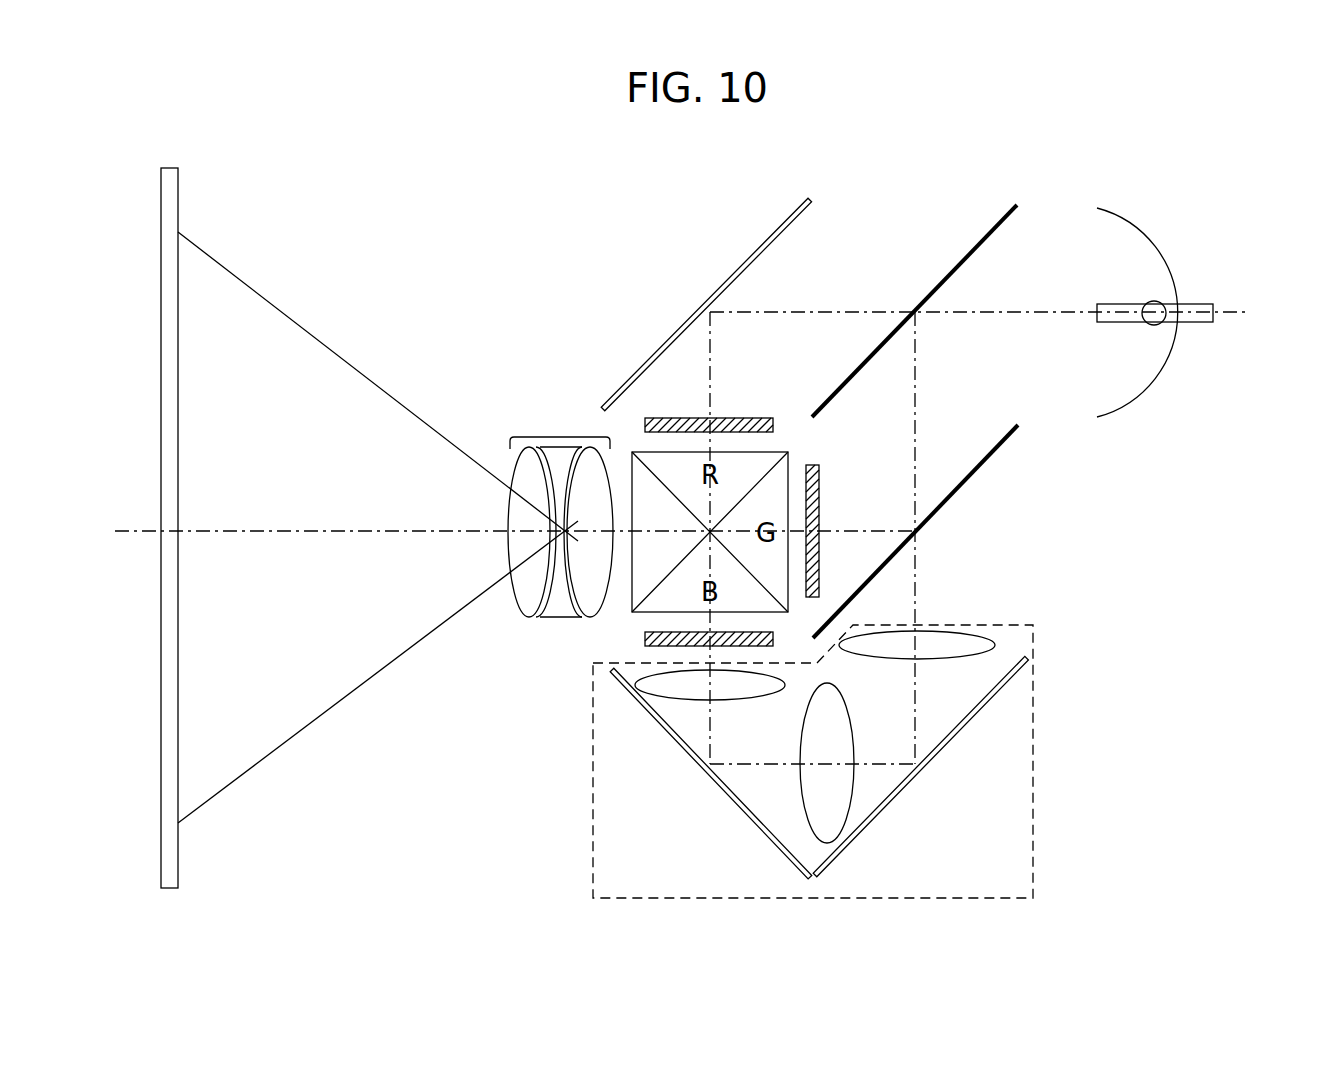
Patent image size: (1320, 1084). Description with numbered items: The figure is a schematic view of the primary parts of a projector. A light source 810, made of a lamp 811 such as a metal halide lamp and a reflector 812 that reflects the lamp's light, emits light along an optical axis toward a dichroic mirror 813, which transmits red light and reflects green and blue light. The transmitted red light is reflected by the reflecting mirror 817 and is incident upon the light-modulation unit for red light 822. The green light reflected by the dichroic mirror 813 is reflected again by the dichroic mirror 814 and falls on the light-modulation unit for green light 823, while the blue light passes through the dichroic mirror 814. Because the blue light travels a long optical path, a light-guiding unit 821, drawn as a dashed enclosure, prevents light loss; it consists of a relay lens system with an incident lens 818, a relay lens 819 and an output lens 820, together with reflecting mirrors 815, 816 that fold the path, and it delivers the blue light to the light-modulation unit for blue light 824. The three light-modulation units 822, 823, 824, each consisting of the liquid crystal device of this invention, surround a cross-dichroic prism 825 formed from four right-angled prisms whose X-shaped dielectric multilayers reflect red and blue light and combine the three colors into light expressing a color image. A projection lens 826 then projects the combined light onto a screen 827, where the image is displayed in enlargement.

The light source 810 is at (1120, 258).
The lamp 811 is at (1162, 300).
The reflector 812 is at (1162, 373).
The dichroic mirror 813 is at (970, 252).
The dichroic mirror 814 is at (965, 472).
The reflecting mirror 815 is at (975, 715).
The reflecting mirror 816 is at (753, 825).
The reflecting mirror 817 is at (737, 263).
The incident lens 818 is at (948, 635).
The relay lens 819 is at (838, 785).
The output lens 820 is at (662, 683).
The light-guiding unit 821 is at (1033, 798).
The light-modulation unit for red light 822 is at (780, 420).
The light-modulation unit for green light 823 is at (820, 487).
The light-modulation unit for blue light 824 is at (645, 641).
The cross-dichroic prism 825 is at (652, 570).
The projection lens 826 is at (555, 437).
The screen 827 is at (178, 765).